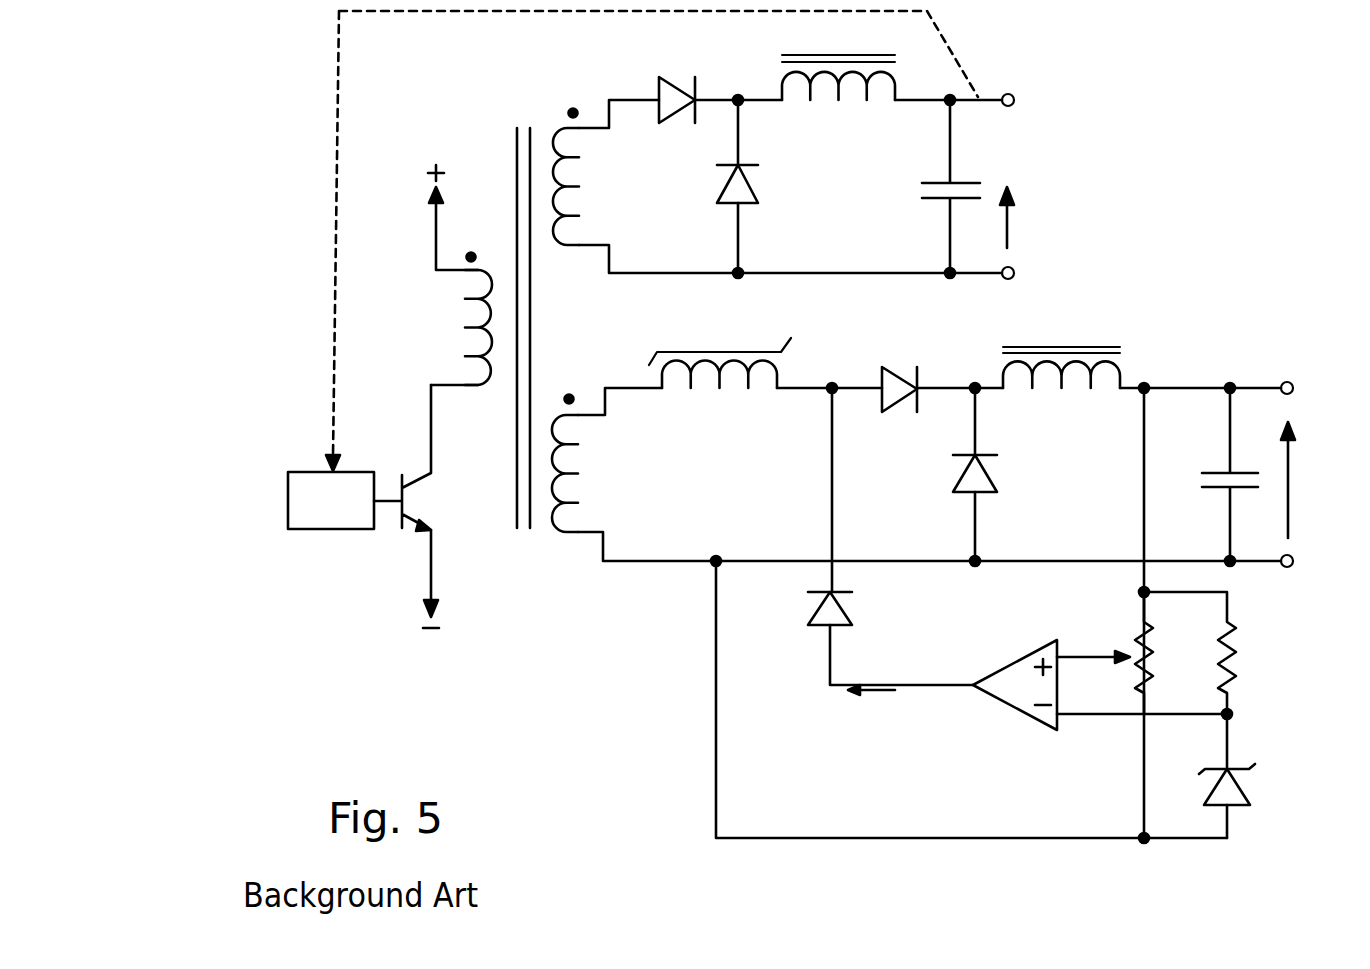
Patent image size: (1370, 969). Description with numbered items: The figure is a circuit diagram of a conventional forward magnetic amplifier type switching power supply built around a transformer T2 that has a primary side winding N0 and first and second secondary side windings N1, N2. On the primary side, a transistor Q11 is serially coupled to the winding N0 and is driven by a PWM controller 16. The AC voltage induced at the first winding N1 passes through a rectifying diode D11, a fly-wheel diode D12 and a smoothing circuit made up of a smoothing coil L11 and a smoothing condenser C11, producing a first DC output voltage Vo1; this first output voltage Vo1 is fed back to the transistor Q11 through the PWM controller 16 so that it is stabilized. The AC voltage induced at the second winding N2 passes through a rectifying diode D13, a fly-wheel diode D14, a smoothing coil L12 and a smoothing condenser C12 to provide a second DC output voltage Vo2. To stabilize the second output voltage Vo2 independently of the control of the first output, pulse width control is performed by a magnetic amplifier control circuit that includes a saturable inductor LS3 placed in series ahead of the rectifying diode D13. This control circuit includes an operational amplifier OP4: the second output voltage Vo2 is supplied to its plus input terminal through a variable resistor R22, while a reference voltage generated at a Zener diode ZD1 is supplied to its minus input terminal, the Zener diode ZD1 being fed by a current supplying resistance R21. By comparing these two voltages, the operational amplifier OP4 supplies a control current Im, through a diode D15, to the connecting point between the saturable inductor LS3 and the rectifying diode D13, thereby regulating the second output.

The PWM controller 16 is at (288, 501).
The transistor Q11 is at (395, 481).
The primary side winding N0 is at (468, 330).
The transformer T2 is at (522, 314).
The first secondary side winding N1 is at (583, 177).
The second secondary side winding N2 is at (582, 464).
The rectifying diode D11 is at (684, 84).
The fly-wheel diode D12 is at (756, 182).
The smoothing coil L11 is at (833, 54).
The smoothing condenser C11 is at (937, 197).
The first DC output voltage Vo1 is at (1030, 216).
The saturable inductor LS3 is at (700, 346).
The rectifying diode D13 is at (907, 376).
The fly-wheel diode D14 is at (995, 470).
The smoothing coil L12 is at (1038, 348).
The smoothing condenser C12 is at (1216, 490).
The second DC output voltage Vo2 is at (1311, 480).
The diode D15 is at (851, 610).
The control current Im is at (871, 703).
The operational amplifier OP4 is at (1003, 712).
The variable resistor R22 is at (1130, 632).
The current supplying resistance R21 is at (1238, 656).
The Zener diode ZD1 is at (1240, 788).